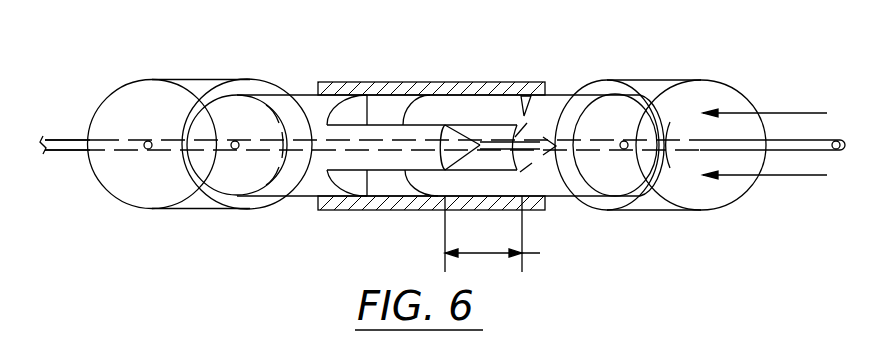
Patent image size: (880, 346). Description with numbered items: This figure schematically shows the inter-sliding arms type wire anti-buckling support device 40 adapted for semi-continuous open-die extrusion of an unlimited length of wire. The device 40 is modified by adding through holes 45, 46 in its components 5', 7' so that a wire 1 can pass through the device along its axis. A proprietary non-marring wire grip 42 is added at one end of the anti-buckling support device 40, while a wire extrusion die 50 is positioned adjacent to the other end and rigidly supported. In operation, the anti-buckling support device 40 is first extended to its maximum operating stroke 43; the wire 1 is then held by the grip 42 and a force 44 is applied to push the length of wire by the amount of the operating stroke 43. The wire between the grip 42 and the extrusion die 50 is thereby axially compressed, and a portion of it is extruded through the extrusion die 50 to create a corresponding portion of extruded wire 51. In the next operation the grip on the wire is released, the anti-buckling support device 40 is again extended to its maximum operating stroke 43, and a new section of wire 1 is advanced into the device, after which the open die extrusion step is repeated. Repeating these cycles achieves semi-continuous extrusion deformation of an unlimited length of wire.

The wire 1 is at (768, 150).
The extruded wire 51 is at (72, 143).
The wire extrusion die 50 is at (213, 78).
The through hole 45 is at (302, 208).
The component 5' is at (288, 101).
The anti-buckling support device 40 is at (423, 117).
The component 7' is at (540, 63).
The maximum operating stroke 43 is at (514, 234).
The through hole 46 is at (563, 190).
The non-marring wire grip 42 is at (635, 88).
The force 44 is at (822, 175).